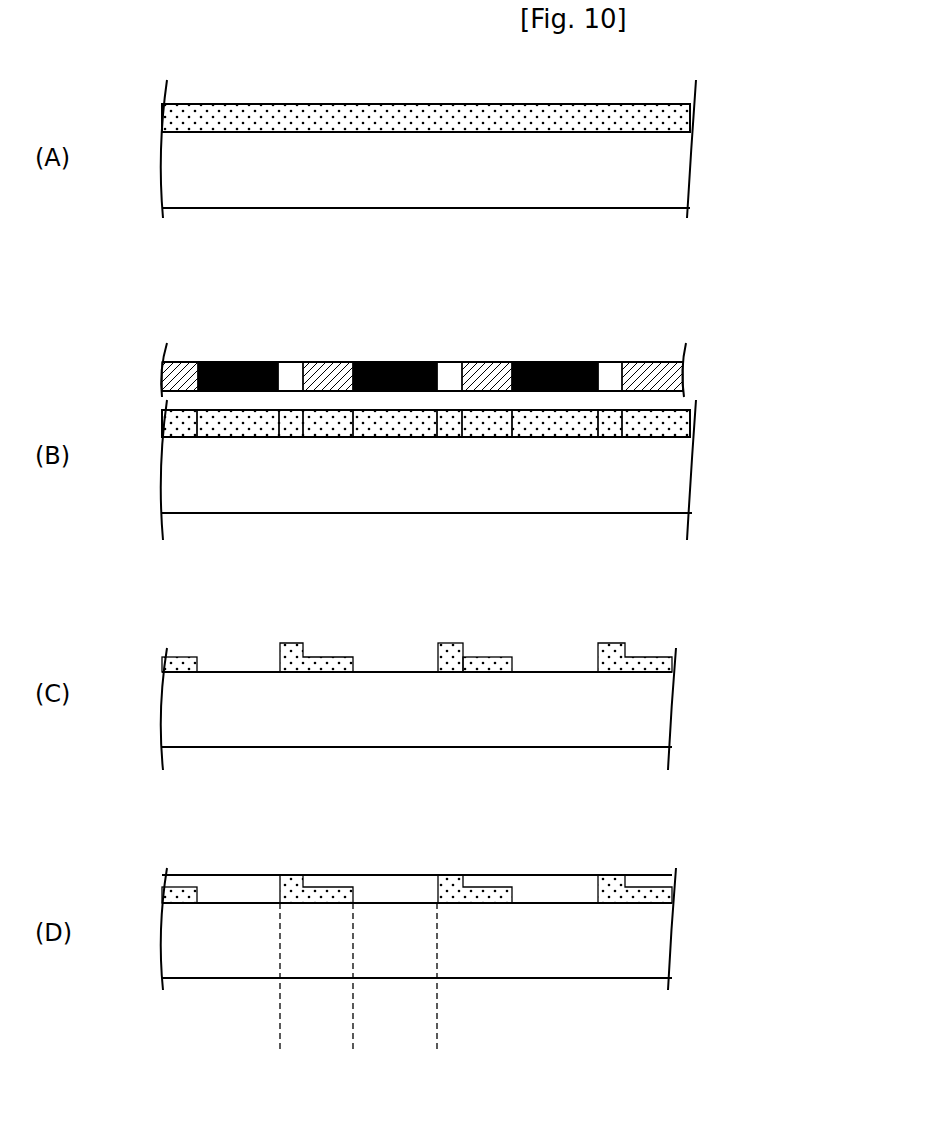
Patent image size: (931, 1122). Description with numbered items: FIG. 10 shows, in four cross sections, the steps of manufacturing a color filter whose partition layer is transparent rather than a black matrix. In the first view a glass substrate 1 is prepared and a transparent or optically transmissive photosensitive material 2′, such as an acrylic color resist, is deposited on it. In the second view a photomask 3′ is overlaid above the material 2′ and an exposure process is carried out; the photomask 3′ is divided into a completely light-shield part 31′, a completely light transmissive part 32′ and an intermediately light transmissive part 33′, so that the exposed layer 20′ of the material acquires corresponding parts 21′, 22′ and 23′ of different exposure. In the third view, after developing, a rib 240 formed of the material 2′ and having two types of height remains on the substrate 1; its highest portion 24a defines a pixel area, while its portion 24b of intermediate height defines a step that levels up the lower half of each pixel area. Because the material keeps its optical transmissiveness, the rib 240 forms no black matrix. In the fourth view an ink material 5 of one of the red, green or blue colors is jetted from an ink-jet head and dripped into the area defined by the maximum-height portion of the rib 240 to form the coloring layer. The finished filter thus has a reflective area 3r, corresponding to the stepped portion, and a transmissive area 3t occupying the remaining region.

The glass substrate 1 is at (672, 183).
The material for forming a partition layer 2′ is at (672, 119).
The photomask 3′ is at (470, 347).
The completely light-shield part 31′ is at (566, 362).
The completely light transmissive part 32′ is at (612, 370).
The intermediately light transmissive part 33′ is at (655, 372).
The exposed material layer 20′ is at (478, 474).
The part corresponding to light-shield part 21′ is at (550, 430).
The part corresponding to light transmissive part 22′ is at (618, 432).
The part corresponding to intermediately transmissive part 23′ is at (658, 432).
The rib 240 is at (417, 737).
The highest portion of the rib 24a is at (463, 639).
The portion of intermediate height 24b is at (512, 652).
The ink material 5 is at (565, 878).
The reflective area 3r is at (344, 1035).
The transmissive area 3t is at (428, 1035).